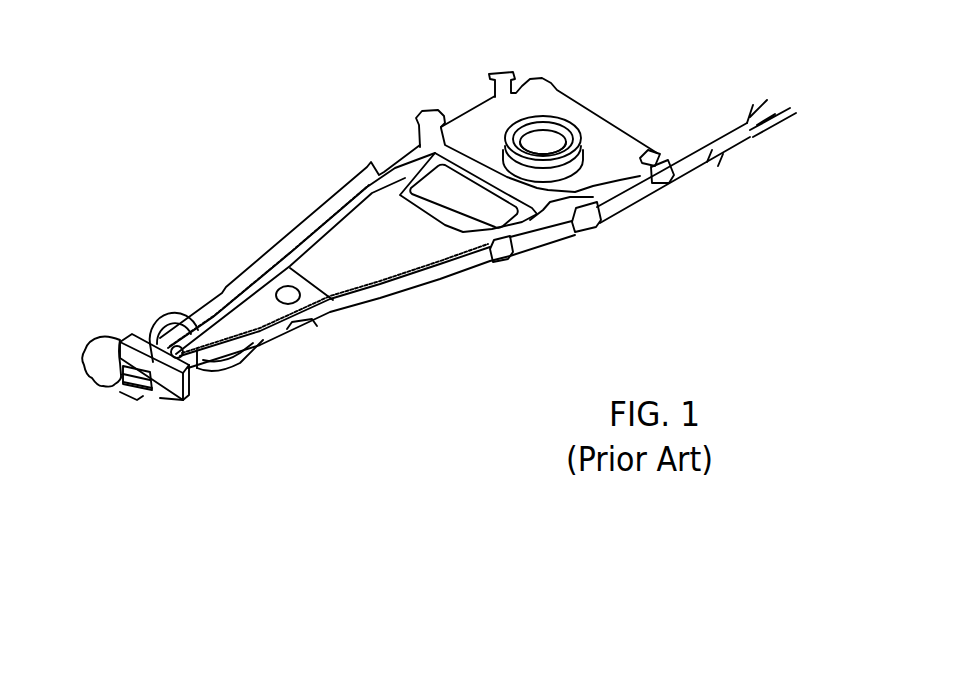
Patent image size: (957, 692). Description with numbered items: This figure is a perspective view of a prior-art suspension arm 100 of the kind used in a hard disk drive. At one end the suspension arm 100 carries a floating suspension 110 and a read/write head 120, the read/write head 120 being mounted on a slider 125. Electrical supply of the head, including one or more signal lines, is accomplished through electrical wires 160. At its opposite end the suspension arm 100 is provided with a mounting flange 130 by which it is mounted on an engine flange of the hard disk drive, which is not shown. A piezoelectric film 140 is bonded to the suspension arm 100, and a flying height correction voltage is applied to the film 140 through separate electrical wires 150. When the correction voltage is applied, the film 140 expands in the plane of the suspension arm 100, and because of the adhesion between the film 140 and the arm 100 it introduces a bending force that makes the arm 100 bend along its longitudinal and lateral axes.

The suspension arm 100 is at (472, 130).
The floating suspension 110 is at (168, 317).
The read/write head 120 is at (115, 404).
The slider 125 is at (192, 402).
The mounting flange 130 is at (566, 136).
The piezoelectric film 140 is at (352, 240).
The electrical wires 150 is at (678, 142).
The electrical wires 160 is at (723, 142).